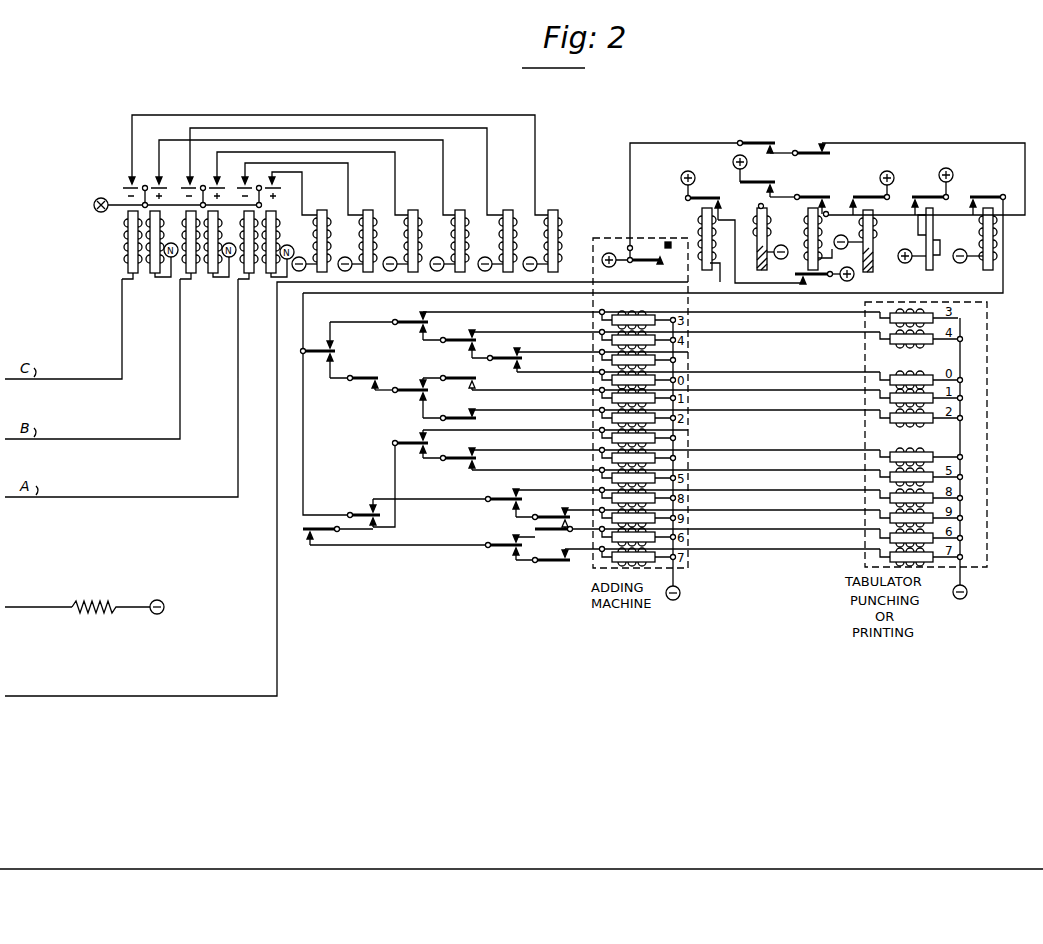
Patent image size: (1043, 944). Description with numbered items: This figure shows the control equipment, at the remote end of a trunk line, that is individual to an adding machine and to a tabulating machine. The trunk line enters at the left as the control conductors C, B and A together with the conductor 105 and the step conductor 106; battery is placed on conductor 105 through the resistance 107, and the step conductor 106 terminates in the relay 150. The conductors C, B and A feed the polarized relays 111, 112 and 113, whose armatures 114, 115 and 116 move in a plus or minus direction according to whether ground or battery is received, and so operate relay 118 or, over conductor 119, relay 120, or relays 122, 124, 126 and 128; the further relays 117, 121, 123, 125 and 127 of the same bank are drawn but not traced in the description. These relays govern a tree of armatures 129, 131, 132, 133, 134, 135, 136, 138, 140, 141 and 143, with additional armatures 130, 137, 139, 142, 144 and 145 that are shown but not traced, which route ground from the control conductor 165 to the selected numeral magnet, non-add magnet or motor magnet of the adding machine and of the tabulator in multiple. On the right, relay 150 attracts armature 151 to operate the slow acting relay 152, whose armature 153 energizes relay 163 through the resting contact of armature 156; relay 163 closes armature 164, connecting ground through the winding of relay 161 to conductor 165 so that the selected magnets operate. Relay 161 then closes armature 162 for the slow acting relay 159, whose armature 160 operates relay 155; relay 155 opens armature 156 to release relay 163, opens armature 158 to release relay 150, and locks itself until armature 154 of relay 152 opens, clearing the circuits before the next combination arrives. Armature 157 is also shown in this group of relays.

The conductor 105 is at (48, 604).
The step conductor 106 is at (48, 694).
The resistance 107 is at (94, 605).
The polarized relay 111 is at (160, 276).
The polarized relay 112 is at (218, 276).
The polarized relay 113 is at (276, 276).
The armature 114 is at (150, 186).
The armature 115 is at (208, 186).
The armature 116 is at (266, 182).
The relay 117 is at (535, 188).
The relay 118 is at (558, 226).
The conductor 119 is at (443, 188).
The relay 120 is at (465, 249).
The relay 121 is at (487, 188).
The relay 122 is at (513, 249).
The relay 123 is at (395, 188).
The relay 124 is at (418, 249).
The relay 125 is at (348, 188).
The relay 126 is at (373, 249).
The relay 127 is at (302, 188).
The relay 128 is at (327, 249).
The armature 129 is at (336, 350).
The contact 130 is at (336, 534).
The armature 131 is at (354, 382).
The armature 132 is at (352, 508).
The armature 133 is at (406, 319).
The armature 134 is at (412, 394).
The armature 135 is at (402, 440).
The armature 136 is at (462, 338).
The contact 137 is at (460, 375).
The armature 138 is at (458, 416).
The contact 139 is at (466, 455).
The armature 140 is at (505, 352).
The armature 141 is at (502, 496).
The contact 142 is at (504, 550).
The armature 143 is at (543, 514).
The contact 144 is at (550, 534).
The contact 145 is at (558, 564).
The relay 150 is at (702, 215).
The armature 151 is at (722, 196).
The slow acting relay 152 is at (760, 205).
The armature 153 is at (770, 141).
The armature 154 is at (752, 182).
The relay 155 is at (808, 216).
The armature 156 is at (814, 150).
The contact 157 is at (822, 194).
The armature 158 is at (820, 280).
The slow acting relay 159 is at (875, 262).
The armature 160 is at (868, 194).
The relay 161 is at (930, 270).
The armature 162 is at (928, 194).
The relay 163 is at (986, 266).
The armature 164 is at (982, 196).
The control conductor 165 is at (648, 258).